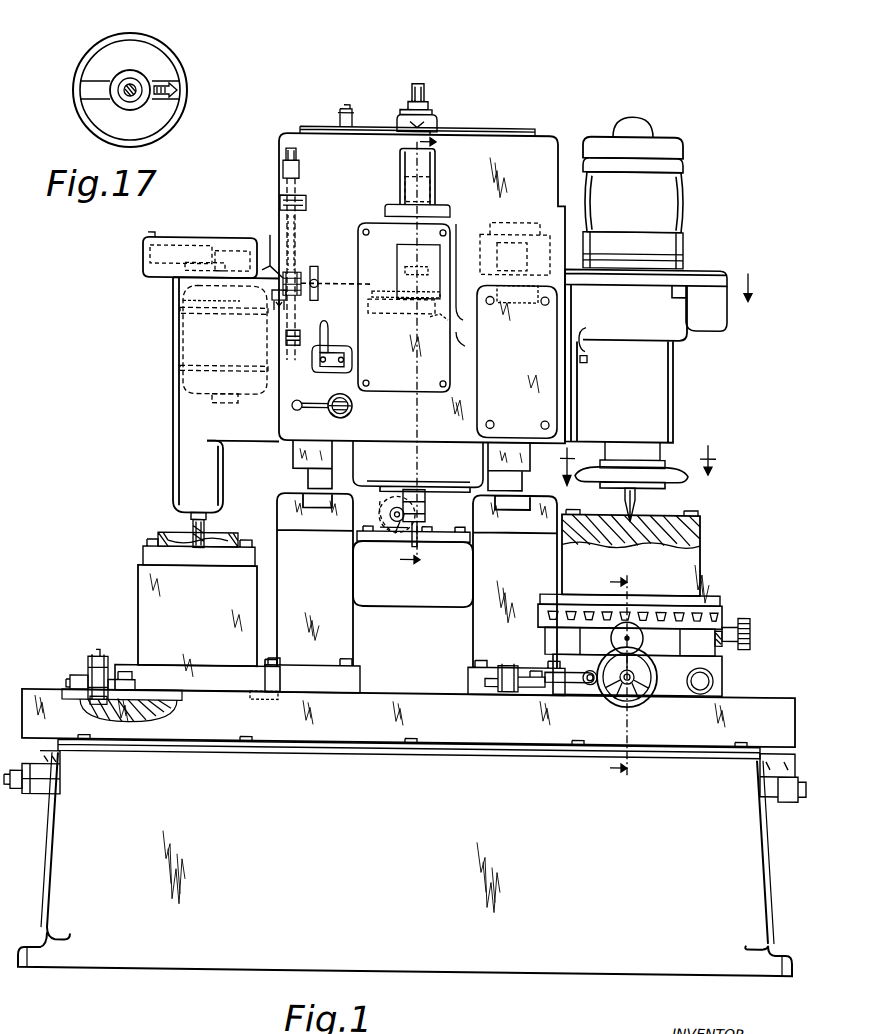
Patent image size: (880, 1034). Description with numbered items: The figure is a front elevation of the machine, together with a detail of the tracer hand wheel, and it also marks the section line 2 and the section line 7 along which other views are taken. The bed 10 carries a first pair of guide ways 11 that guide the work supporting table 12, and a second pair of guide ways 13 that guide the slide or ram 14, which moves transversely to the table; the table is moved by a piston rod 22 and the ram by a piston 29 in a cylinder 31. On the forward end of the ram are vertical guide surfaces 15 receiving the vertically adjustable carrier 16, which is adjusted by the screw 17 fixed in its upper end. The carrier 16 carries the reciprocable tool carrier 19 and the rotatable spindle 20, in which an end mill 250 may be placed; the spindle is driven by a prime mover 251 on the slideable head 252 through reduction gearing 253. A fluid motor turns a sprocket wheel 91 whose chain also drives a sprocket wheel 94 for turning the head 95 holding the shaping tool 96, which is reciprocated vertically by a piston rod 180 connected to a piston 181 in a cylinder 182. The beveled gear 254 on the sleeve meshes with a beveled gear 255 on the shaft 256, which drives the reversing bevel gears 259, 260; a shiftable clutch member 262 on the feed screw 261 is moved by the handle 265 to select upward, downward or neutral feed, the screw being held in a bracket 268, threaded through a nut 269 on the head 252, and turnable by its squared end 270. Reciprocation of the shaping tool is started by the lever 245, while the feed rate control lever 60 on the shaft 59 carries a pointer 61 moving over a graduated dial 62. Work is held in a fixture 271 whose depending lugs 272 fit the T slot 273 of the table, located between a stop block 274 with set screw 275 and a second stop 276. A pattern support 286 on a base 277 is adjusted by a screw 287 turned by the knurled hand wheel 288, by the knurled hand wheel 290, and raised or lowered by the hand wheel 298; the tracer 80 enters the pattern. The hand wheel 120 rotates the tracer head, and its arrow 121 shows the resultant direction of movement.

In FIG. 17, the hand wheel 120 is at (170, 54).
In FIG. 1, the hand wheel 120 is at (690, 482).
In FIG. 17, the arrow 121 is at (168, 100).
In FIG. 1, the screw 17 is at (425, 95).
In FIG. 1, the vertical guide surfaces 15 is at (513, 128).
In FIG. 1, the carrier 16 is at (548, 149).
In FIG. 1, the section line 2- 2 is at (425, 352).
In FIG. 1, the cylinder 182 is at (436, 187).
In FIG. 1, the piston 181 is at (428, 192).
In FIG. 1, the piston rod 180 is at (410, 232).
In FIG. 1, the beveled gear 255 is at (398, 268).
In FIG. 1, the shaft 256 is at (402, 310).
In FIG. 1, the beveled gear 254 is at (437, 315).
In FIG. 1, the sprocket wheel 94 is at (460, 278).
In FIG. 1, the head 95 is at (463, 344).
In FIG. 1, the sprocket wheel 91 is at (540, 300).
In FIG. 1, the squared end 270 is at (290, 168).
In FIG. 1, the bracket 268 is at (280, 202).
In FIG. 1, the feed screw 261 is at (296, 243).
In FIG. 1, the bevel gear 259 is at (268, 240).
In FIG. 1, the shiftable clutch member 262 is at (300, 272).
In FIG. 1, the handle 265 is at (320, 280).
In FIG. 1, the section line 7- 7 is at (512, 300).
In FIG. 1, the nut 269 is at (308, 332).
In FIG. 1, the lever 245 is at (330, 335).
In FIG. 1, the shaft 59 is at (352, 400).
In FIG. 1, the pointer 61 is at (352, 408).
In FIG. 1, the graduated dial 62 is at (346, 418).
In FIG. 1, the feed rate control lever 60 is at (300, 410).
In FIG. 1, the slide 14 is at (530, 494).
In FIG. 1, the second pair of guide ways 13 is at (277, 502).
In FIG. 1, the tracer 80 is at (636, 507).
In FIG. 1, the slideable head 252 is at (173, 296).
In FIG. 1, the prime mover 251 is at (210, 330).
In FIG. 1, the bevel gear 260 is at (272, 298).
In FIG. 1, the reduction gearing 253 is at (208, 262).
In FIG. 1, the spindle 20 is at (188, 515).
In FIG. 1, the end mill 250 is at (190, 530).
In FIG. 1, the fixture 271 is at (138, 600).
In FIG. 1, the stop block 274 is at (88, 660).
In FIG. 1, the set screw 275 is at (70, 680).
In FIG. 1, the T slot 273 is at (72, 690).
In FIG. 1, the table 12 is at (54, 697).
In FIG. 1, the depending lugs 272 is at (135, 722).
In FIG. 1, the bed 10 is at (100, 967).
In FIG. 1, the first pair of guide ways 11 is at (60, 776).
In FIG. 1, the piston rod 22 is at (45, 792).
In FIG. 1, the shaping tool 96 is at (410, 548).
In FIG. 1, the tool carrier 19 is at (425, 508).
In FIG. 1, the cylinder 31 is at (380, 520).
In FIG. 1, the piston 29 is at (395, 530).
In FIG. 1, the pattern support 286 is at (718, 606).
In FIG. 1, the knurled hand wheel 288 is at (748, 616).
In FIG. 1, the screw 287 is at (720, 645).
In FIG. 1, the knurled hand wheel 290 is at (643, 638).
In FIG. 1, the base 277 is at (722, 685).
In FIG. 1, the hand wheel 298 is at (618, 705).
In FIG. 1, the stop 276 is at (505, 668).